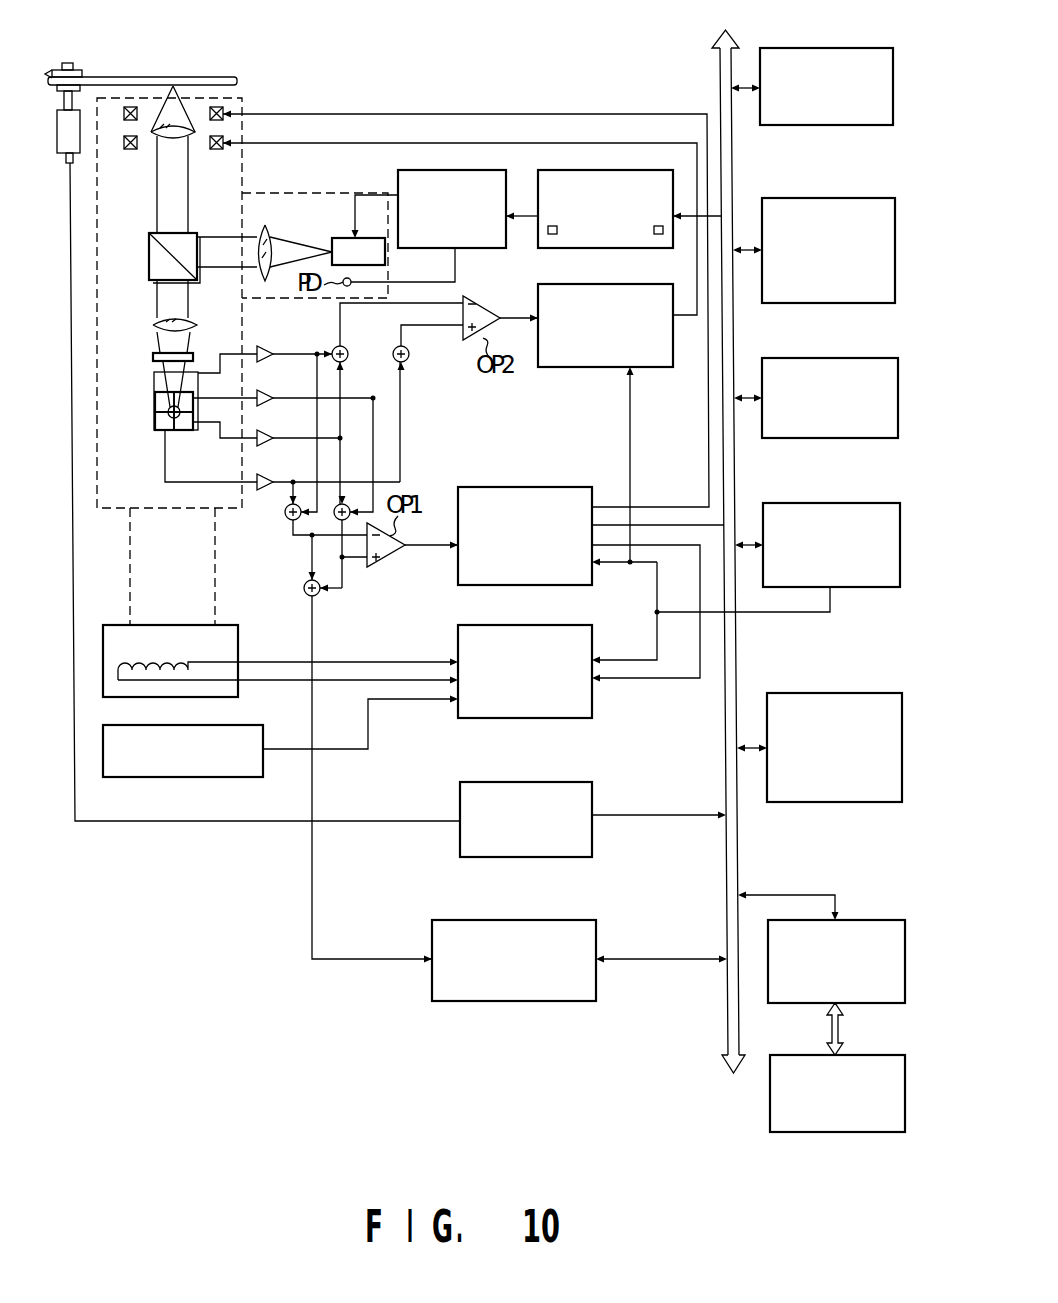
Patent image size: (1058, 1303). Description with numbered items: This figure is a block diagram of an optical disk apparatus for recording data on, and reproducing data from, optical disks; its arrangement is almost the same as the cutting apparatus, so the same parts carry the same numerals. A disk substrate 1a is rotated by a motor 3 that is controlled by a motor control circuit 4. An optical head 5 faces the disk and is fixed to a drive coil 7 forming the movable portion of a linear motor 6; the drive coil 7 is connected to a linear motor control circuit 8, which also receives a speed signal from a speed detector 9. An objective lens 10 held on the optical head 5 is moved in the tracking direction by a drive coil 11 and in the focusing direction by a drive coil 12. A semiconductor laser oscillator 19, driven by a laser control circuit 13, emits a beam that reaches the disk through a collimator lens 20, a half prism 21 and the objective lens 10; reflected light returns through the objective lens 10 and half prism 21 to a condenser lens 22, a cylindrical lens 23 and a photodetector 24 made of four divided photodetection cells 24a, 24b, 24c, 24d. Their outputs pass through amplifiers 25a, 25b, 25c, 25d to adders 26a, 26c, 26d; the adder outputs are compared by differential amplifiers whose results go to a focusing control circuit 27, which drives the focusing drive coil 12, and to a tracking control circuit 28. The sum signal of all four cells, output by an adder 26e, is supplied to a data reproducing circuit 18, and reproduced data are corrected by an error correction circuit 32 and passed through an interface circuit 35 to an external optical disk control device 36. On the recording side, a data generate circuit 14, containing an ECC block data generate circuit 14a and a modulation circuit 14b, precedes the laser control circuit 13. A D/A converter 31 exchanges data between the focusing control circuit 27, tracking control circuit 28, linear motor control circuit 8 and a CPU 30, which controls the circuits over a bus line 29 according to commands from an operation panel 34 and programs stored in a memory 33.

The glass substrate 1a is at (172, 77).
The motor 3 is at (75, 158).
The motor control circuit 4 is at (526, 779).
The optical head 5 is at (272, 192).
The linear motor 6 is at (172, 625).
The drive coil 7 is at (178, 660).
The linear motor control circuit 8 is at (528, 621).
The speed detector 9 is at (252, 722).
The objective lens 10 is at (176, 140).
The drive coil 11 is at (216, 152).
The drive coil 12 is at (224, 108).
The laser control circuit 13 is at (452, 170).
The data generate circuit 14 is at (615, 170).
The ECC block data generate circuit 14a is at (659, 236).
The modulation circuit 14b is at (551, 236).
The data reproducing circuit 18 is at (520, 920).
The semiconductor laser oscillator 19 is at (338, 238).
The collimator lens 20 is at (258, 235).
The half prism 21 is at (150, 256).
The condenser lens 22 is at (153, 322).
The cylindrical lens 23 is at (153, 356).
The photodetector 24 is at (155, 418).
The photodetection cell 24a is at (155, 400).
The photodetection cell 24b is at (200, 375).
The photodetection cell 24c is at (182, 432).
The photodetection cell 24d is at (160, 432).
The amplifier 25a is at (272, 353).
The amplifier 25b is at (272, 397).
The amplifier 25c is at (272, 439).
The amplifier 25d is at (272, 481).
The adder 26a is at (347, 350).
The adder 26c is at (288, 522).
The adder 26d is at (338, 522).
The adder 26e is at (302, 589).
The focusing control circuit 27 is at (581, 367).
The tracking control circuit 28 is at (530, 482).
The bus line 29 is at (738, 840).
The CPU 30 is at (825, 196).
The D/A converter 31 is at (833, 503).
The error correction circuit 32 is at (840, 691).
The memory 33 is at (828, 356).
The operation panel 34 is at (825, 45).
The interface circuit 35 is at (861, 918).
The optical disk control device 36 is at (862, 1051).